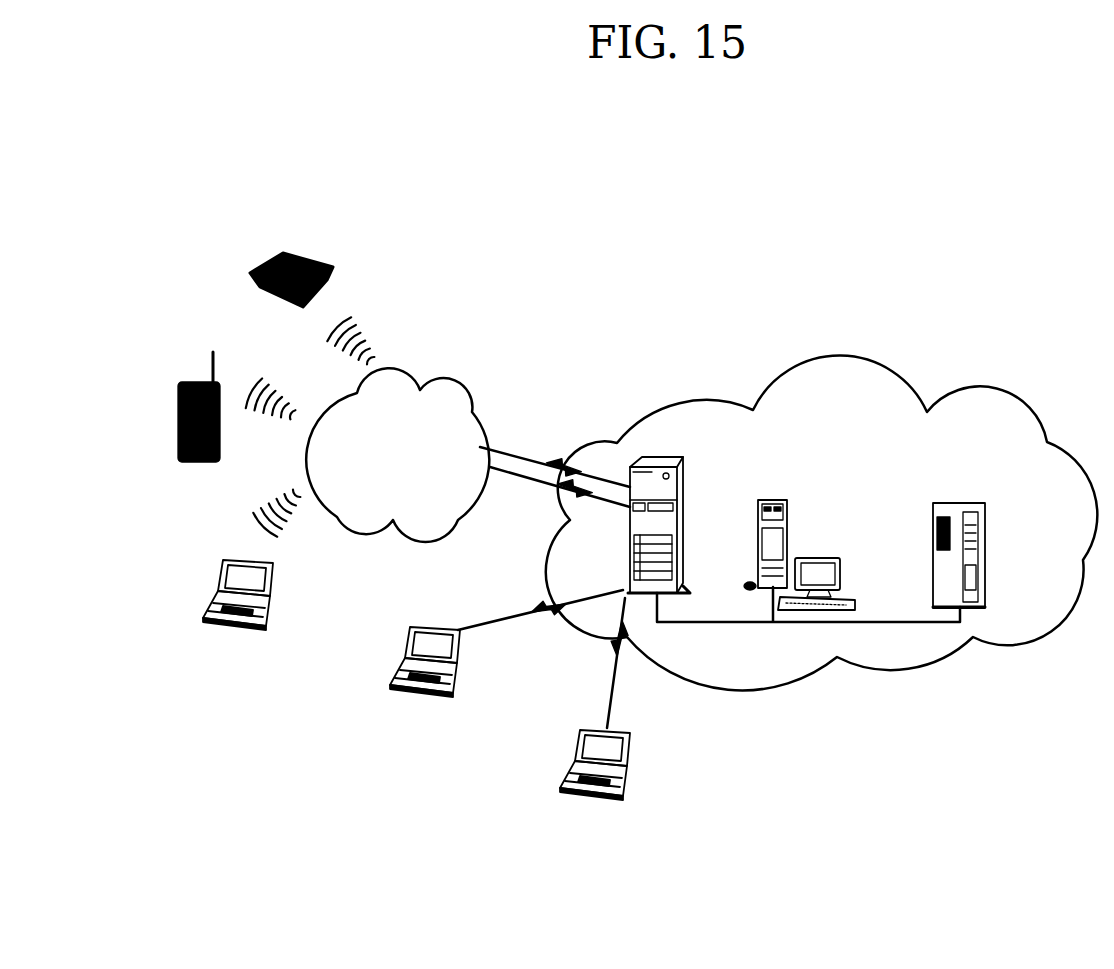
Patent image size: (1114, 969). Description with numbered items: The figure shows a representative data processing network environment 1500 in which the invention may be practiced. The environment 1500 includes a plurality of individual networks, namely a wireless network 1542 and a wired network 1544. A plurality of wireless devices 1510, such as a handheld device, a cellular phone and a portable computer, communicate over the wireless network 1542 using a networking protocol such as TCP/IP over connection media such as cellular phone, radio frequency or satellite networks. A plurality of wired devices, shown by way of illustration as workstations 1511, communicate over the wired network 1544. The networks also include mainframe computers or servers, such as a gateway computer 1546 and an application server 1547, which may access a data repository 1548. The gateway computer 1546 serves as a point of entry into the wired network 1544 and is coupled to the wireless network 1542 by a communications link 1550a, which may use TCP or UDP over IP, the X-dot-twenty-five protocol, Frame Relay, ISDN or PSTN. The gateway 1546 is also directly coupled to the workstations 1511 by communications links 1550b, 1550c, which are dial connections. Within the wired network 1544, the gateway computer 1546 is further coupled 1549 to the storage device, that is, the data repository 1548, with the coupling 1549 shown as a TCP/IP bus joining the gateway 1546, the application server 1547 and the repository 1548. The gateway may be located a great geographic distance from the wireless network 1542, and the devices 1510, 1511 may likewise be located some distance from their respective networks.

The data processing network environment 1500 is at (633, 506).
The wireless devices 1510 is at (277, 470).
The workstations 1511 is at (509, 732).
The wireless network 1542 is at (397, 447).
The wired network 1544 is at (821, 515).
The gateway computer 1546 is at (699, 508).
The application server 1547 is at (799, 539).
The data repository 1548 is at (989, 555).
The coupling 1549 is at (808, 620).
The communications link 1550a is at (554, 441).
The communications link 1550b is at (540, 605).
The communications link 1550c is at (646, 663).